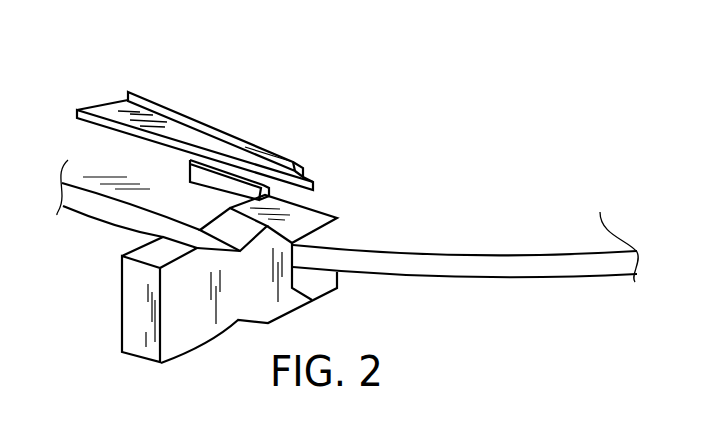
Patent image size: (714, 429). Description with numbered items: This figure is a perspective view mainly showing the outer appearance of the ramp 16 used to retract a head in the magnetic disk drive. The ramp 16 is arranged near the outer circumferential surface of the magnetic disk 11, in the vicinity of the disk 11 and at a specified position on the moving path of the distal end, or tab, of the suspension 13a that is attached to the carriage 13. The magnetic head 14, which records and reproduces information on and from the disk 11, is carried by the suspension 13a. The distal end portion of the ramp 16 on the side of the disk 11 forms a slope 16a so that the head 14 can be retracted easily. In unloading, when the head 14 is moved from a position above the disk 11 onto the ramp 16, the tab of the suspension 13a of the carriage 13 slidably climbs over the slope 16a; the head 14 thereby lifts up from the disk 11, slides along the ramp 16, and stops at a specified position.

The magnetic disk 11 is at (593, 244).
The carriage 13 is at (103, 95).
The suspension 13a is at (172, 125).
The magnetic head 14 is at (291, 163).
The ramp 16 is at (133, 318).
The slope 16a is at (333, 217).